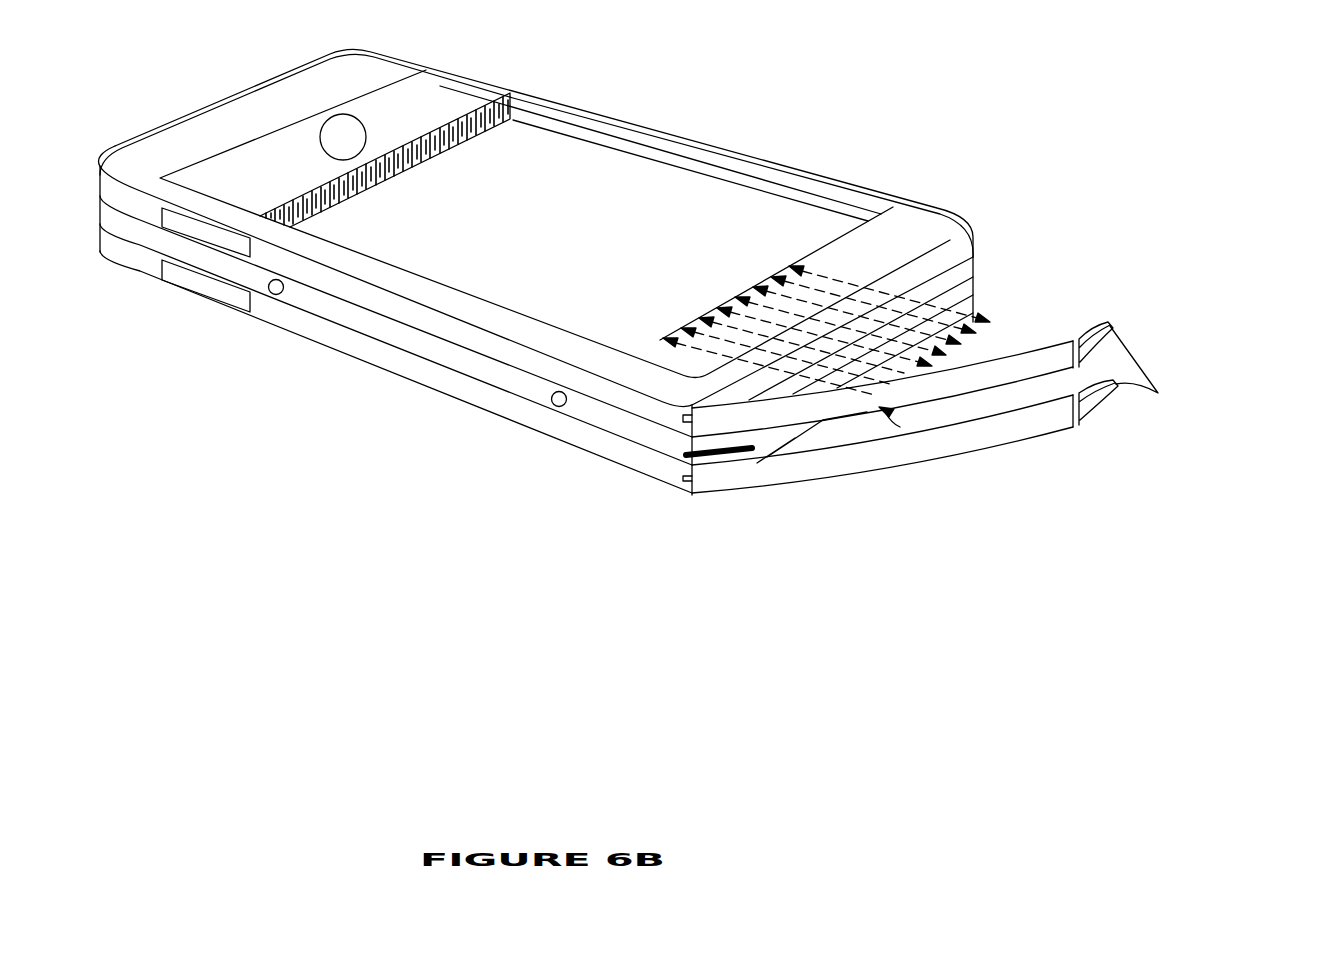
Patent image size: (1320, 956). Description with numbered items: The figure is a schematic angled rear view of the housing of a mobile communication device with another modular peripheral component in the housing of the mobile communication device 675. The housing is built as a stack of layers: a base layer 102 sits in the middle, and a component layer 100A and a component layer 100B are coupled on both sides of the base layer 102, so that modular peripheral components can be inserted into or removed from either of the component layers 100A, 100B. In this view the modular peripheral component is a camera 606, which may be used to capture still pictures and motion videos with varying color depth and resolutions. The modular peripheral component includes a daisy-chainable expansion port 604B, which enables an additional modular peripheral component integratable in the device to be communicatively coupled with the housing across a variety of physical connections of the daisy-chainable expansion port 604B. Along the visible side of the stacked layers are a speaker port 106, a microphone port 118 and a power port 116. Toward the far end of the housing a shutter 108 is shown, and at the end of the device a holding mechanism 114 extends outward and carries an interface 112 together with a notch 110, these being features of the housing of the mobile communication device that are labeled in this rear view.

The camera 606 is at (427, 74).
The daisy-chainable expansion port 604B is at (512, 93).
The shutter 108 is at (917, 224).
The interface 112 is at (1086, 364).
The notch 110 is at (1158, 393).
The holding mechanism 114 is at (977, 378).
The speaker port 106 is at (210, 281).
The microphone port 118 is at (277, 295).
The component layer 100A is at (500, 347).
The power port 116 is at (559, 407).
The base layer 102 is at (648, 438).
The component layer 100B is at (672, 478).
The rear view of the housing of the mobile communication device with another modular 675 is at (670, 672).